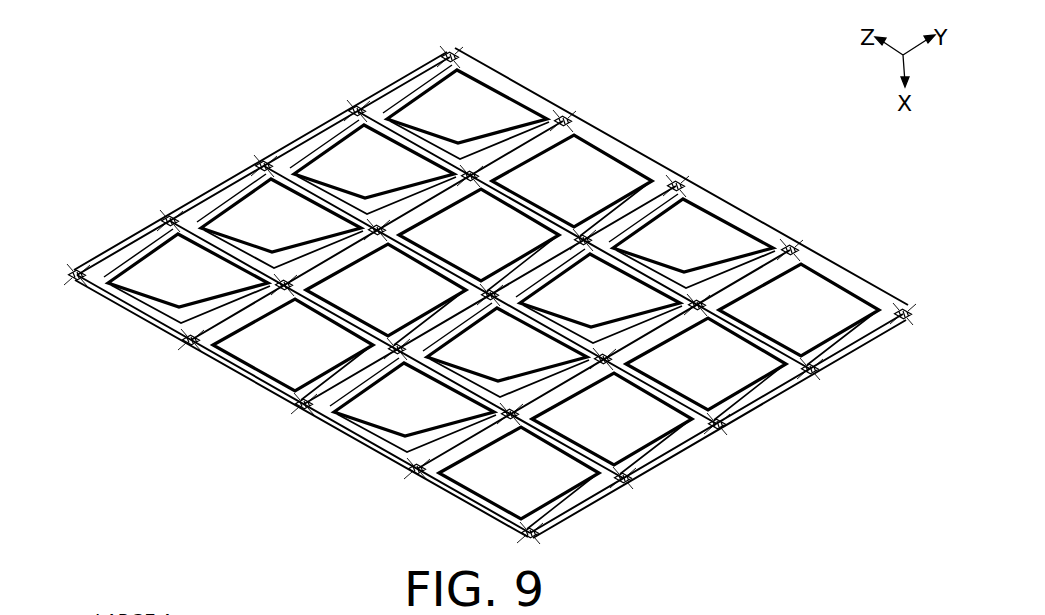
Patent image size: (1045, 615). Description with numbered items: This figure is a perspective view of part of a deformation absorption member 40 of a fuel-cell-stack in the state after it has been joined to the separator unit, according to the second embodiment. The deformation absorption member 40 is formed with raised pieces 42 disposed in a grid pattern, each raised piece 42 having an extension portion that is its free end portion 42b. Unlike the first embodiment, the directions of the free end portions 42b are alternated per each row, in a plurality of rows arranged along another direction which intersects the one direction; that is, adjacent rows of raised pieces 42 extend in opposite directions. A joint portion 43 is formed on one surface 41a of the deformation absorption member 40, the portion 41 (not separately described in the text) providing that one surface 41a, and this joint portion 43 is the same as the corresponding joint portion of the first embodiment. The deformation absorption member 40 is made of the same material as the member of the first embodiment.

The deformation absorption member 40 is at (60, 51).
The frame 41 is at (410, 461).
The one surface 41a is at (459, 496).
The raised pieces 42 is at (737, 367).
The free end portions 42b is at (747, 345).
The joint portion 43 is at (464, 171).